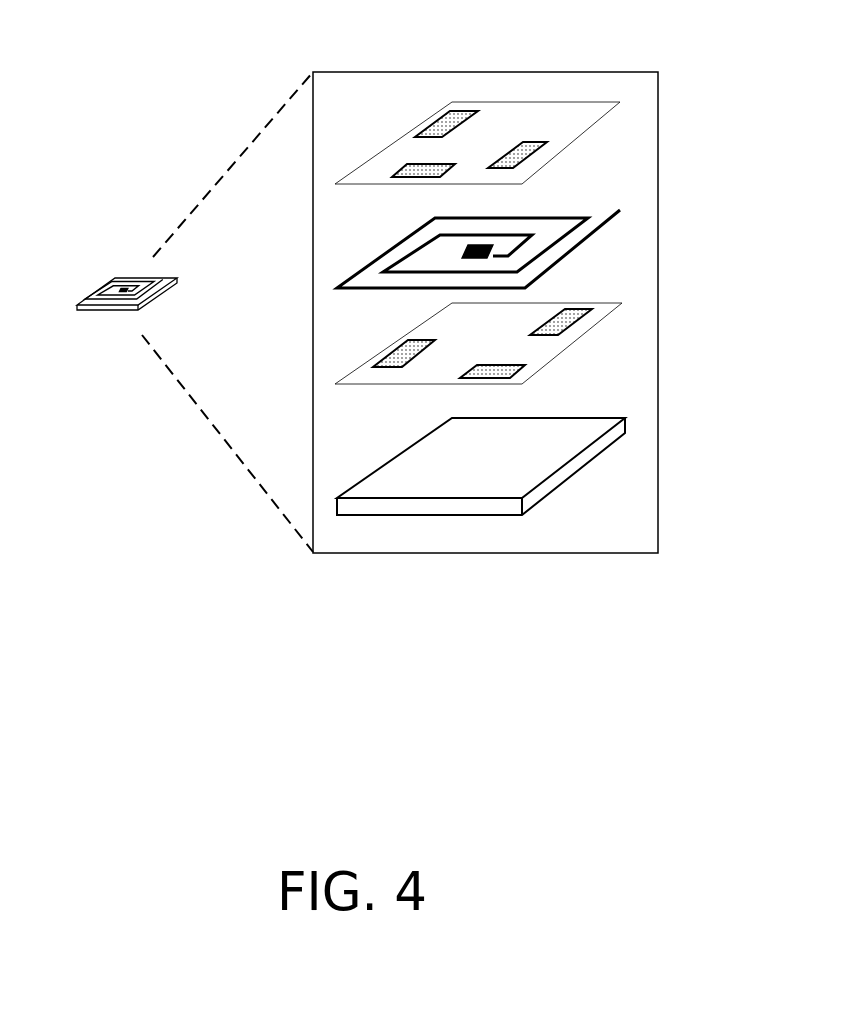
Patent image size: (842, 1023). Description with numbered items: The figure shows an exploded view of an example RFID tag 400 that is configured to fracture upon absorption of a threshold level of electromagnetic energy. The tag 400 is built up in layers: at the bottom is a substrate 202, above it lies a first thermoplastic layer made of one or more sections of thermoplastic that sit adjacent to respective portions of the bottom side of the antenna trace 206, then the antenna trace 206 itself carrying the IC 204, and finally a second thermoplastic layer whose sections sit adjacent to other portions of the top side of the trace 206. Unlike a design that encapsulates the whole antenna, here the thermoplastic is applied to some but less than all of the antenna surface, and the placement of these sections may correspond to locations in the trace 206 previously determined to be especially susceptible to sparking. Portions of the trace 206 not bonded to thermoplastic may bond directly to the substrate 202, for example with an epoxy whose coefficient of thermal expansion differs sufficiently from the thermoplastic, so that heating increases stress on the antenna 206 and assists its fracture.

The RFID tag 400 is at (106, 248).
The IC 204 is at (497, 238).
The antenna trace 206 is at (600, 200).
The substrate 202 is at (398, 528).